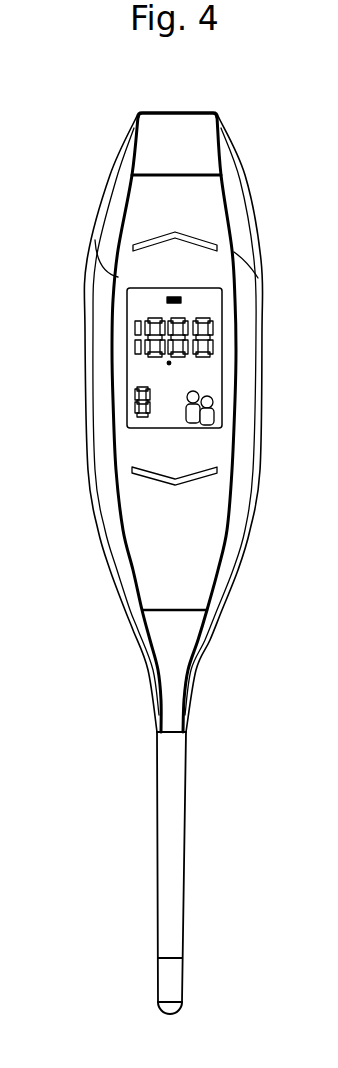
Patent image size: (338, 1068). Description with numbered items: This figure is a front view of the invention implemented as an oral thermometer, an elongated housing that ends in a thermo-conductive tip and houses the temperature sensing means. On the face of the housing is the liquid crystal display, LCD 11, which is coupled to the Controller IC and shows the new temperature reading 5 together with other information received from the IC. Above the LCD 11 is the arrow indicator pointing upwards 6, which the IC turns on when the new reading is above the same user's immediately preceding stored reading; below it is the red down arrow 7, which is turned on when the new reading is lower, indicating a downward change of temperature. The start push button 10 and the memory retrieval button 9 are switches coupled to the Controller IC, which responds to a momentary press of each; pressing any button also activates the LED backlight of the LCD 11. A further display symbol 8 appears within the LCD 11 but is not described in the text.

The start push button 10 is at (153, 113).
The new temperature reading 5 is at (171, 371).
The arrow indicator pointing upwards 6 is at (217, 245).
The red down arrow 7 is at (213, 478).
The mode indicator icon 8 is at (219, 410).
The memory retrieval button 9 is at (148, 568).
The liquid crystal display 11 is at (132, 412).